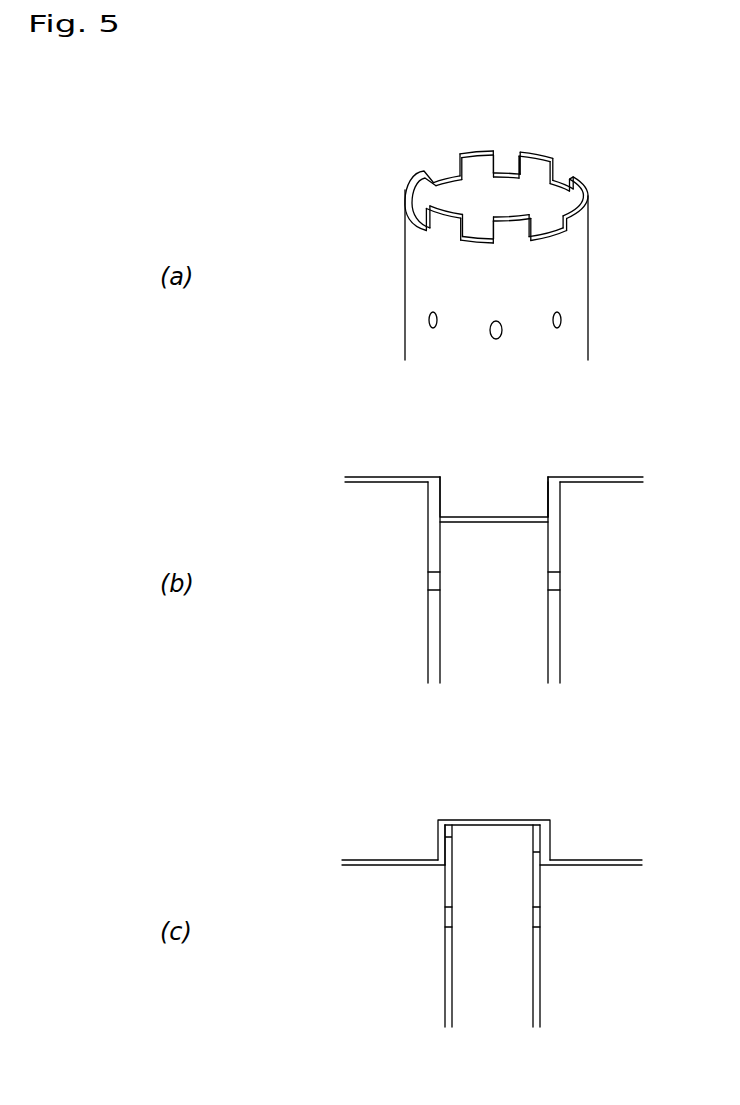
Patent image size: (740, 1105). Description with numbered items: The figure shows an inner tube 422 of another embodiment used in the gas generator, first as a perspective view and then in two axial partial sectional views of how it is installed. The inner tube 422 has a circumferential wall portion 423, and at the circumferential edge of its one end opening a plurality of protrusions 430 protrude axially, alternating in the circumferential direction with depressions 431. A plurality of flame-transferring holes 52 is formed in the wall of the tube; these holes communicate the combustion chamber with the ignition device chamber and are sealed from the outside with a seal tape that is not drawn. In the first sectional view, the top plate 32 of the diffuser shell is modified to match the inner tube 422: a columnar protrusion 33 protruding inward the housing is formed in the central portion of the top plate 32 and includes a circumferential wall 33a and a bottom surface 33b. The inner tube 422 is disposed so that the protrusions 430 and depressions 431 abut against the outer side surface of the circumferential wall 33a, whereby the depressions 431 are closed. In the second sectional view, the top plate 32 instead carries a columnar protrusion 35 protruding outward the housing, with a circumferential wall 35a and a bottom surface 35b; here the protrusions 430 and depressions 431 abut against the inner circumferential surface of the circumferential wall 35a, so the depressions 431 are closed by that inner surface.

The inner tube 422 is at (600, 276).
The circumferential wall portion 423 is at (417, 262).
The protrusions 430 is at (474, 154).
The depressions 431 is at (444, 179).
The flame-transferring holes 52 is at (430, 320).
The top plate 32 is at (593, 480).
The columnar protrusion 33 is at (474, 508).
The circumferential wall 33a is at (543, 495).
The bottom surface 33b is at (477, 523).
The columnar protrusion 35 is at (503, 821).
The circumferential wall 35a is at (457, 835).
The bottom surface 35b is at (480, 827).